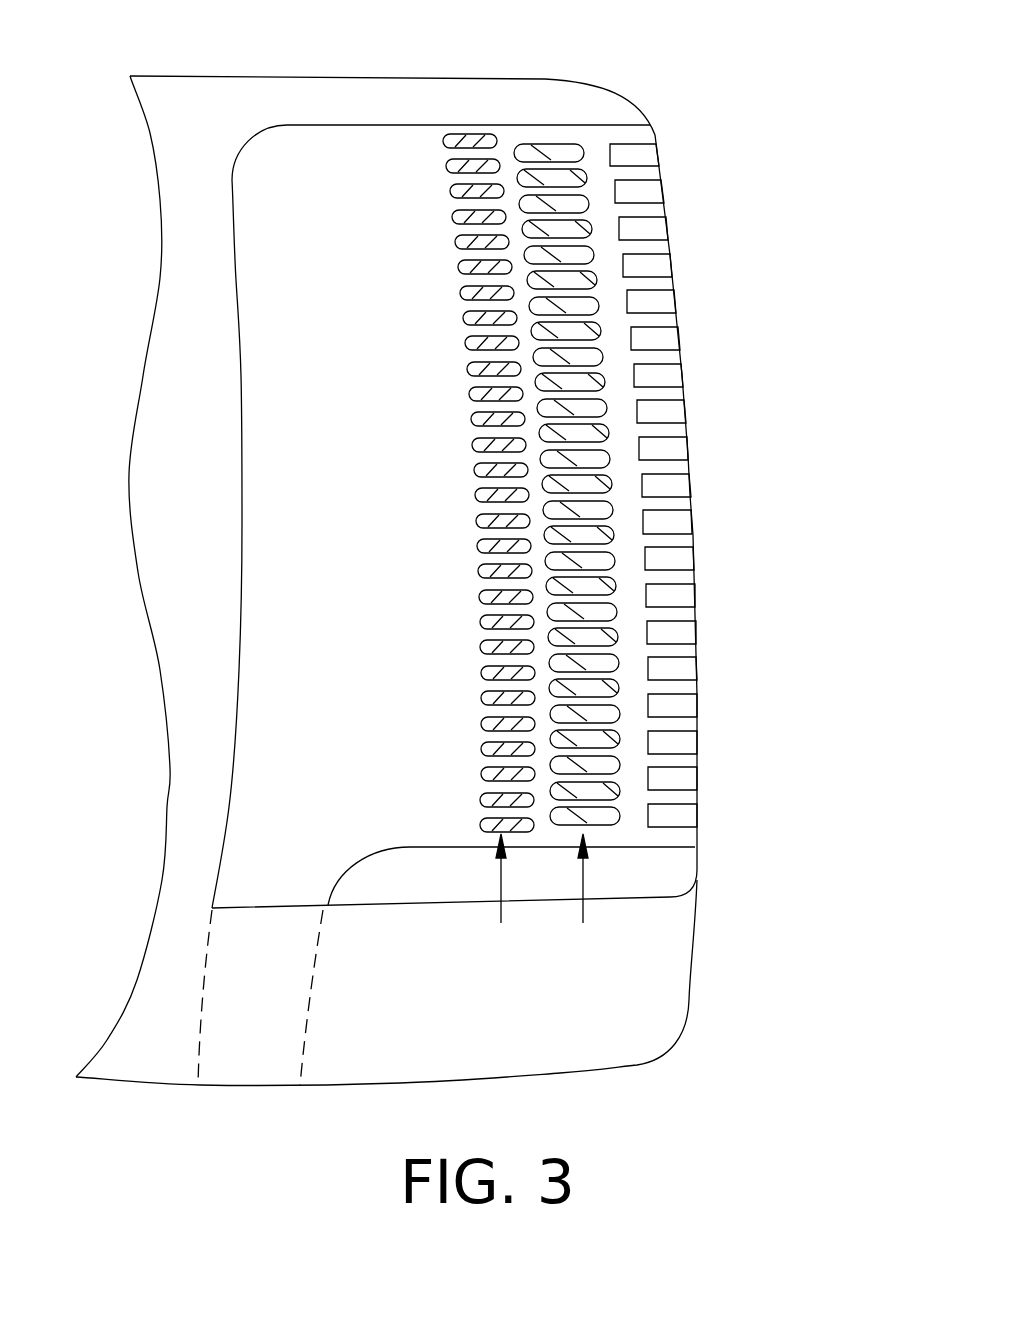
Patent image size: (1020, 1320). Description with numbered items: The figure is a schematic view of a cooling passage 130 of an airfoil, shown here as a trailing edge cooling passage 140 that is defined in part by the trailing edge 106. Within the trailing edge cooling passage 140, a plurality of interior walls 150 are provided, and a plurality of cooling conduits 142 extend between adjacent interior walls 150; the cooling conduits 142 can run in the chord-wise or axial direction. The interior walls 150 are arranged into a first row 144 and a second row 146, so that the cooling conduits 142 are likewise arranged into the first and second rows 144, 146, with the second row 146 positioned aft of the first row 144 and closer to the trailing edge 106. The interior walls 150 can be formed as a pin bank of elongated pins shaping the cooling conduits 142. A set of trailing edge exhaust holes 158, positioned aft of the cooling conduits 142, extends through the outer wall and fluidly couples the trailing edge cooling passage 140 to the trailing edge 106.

The trailing edge 106 is at (697, 613).
The cooling passage 130 is at (376, 102).
The trailing edge cooling passage 140 is at (337, 120).
The cooling conduits 142 is at (472, 152).
The first row 144 is at (501, 923).
The second row 146 is at (583, 923).
The interior walls 150 is at (570, 140).
The trailing edge exhaust holes 158 is at (628, 136).